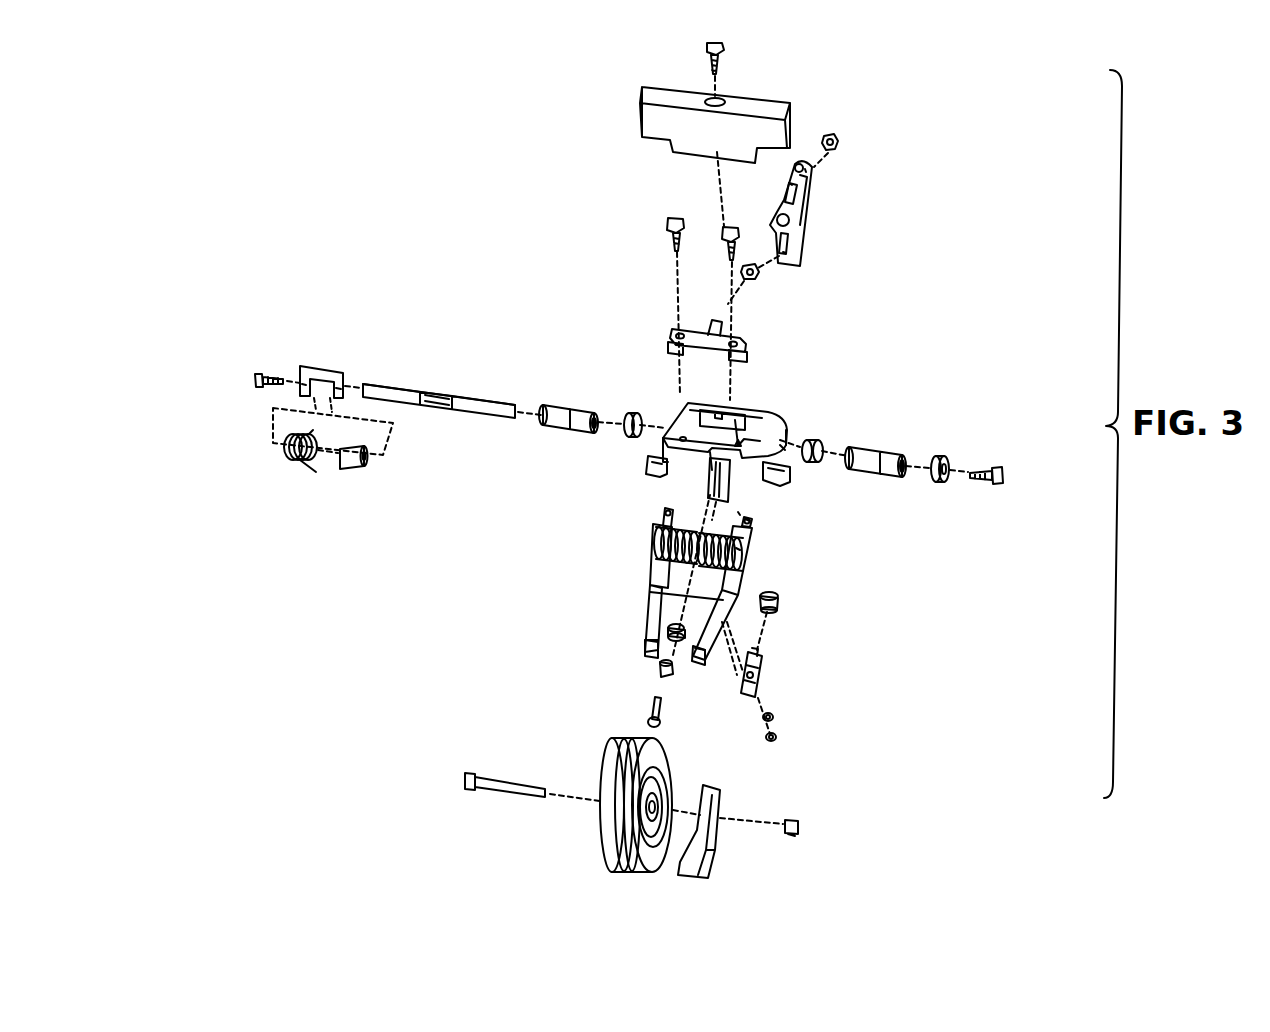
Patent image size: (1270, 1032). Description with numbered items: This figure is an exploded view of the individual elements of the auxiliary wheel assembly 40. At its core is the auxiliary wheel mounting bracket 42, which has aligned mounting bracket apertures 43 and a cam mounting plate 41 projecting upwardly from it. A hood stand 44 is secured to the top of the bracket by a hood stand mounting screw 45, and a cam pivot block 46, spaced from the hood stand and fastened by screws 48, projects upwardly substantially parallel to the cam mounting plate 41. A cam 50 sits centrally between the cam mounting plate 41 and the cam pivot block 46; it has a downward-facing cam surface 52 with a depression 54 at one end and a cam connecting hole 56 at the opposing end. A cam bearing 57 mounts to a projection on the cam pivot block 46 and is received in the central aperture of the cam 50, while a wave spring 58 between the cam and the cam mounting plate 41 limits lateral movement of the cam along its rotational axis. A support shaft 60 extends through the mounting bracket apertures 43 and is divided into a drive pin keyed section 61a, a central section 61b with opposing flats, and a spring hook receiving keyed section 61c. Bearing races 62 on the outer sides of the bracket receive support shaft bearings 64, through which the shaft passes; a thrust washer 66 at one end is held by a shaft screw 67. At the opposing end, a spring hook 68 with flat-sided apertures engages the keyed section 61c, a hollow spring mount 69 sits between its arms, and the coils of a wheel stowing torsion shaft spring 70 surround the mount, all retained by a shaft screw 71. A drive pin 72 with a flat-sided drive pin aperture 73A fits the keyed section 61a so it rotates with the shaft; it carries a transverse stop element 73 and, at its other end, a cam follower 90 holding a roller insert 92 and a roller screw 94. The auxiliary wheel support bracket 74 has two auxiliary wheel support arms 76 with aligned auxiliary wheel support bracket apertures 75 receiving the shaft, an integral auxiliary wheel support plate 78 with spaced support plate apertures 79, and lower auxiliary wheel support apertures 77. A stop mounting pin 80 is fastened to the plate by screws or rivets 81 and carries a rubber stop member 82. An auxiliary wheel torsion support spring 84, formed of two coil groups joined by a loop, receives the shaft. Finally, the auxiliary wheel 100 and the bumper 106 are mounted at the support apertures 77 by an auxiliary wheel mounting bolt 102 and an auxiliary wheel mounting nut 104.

The auxiliary wheel assembly 40 is at (500, 573).
The cam mounting plate 41 is at (735, 405).
The auxiliary wheel mounting bracket 42 is at (784, 420).
The mounting bracket apertures 43 is at (782, 448).
The hood stand 44 is at (790, 118).
The hood stand mounting screw 45 is at (722, 48).
The cam pivot block 46 is at (672, 347).
The screws 48 is at (726, 228).
The cam 50 is at (810, 210).
The cam surface 52 is at (780, 245).
The depression 54 is at (792, 260).
The cam connecting hole 56 is at (812, 176).
The cam bearing 57 is at (760, 275).
The wave spring 58 is at (840, 139).
The support shaft 60 is at (482, 412).
The drive pin keyed section 61a is at (484, 400).
The central section 61b is at (412, 393).
The spring hook receiving keyed section 61c is at (380, 387).
The bearing races 62 is at (633, 420).
The support shaft bearings 64 is at (572, 412).
The thrust washer 66 is at (942, 458).
The shaft screw 67 is at (998, 468).
The spring hook 68 is at (316, 366).
The hollow spring mount 69 is at (345, 470).
The wheel stowing torsion shaft spring 70 is at (292, 466).
The shaft screw 71 is at (255, 380).
The drive pin 72 is at (708, 480).
The stop element 73 is at (660, 462).
The drive pin aperture 73A is at (780, 480).
The auxiliary wheel support bracket 74 is at (758, 528).
The auxiliary wheel support bracket aperture 75 is at (742, 556).
The auxiliary wheel support arms 76 is at (647, 557).
The auxiliary wheel support apertures 77 is at (648, 648).
The auxiliary wheel support plate 78 is at (697, 583).
The support plate apertures 79 is at (697, 567).
The stop mounting pin 80 is at (762, 680).
The stop mounting pin screws or rivets 81 is at (773, 716).
The rubber stop member 82 is at (777, 606).
The auxiliary wheel torsion support spring 84 is at (740, 520).
The cam follower 90 is at (668, 630).
The roller insert 92 is at (656, 670).
The roller screw 94 is at (655, 710).
The auxiliary wheel 100 is at (606, 842).
The auxiliary wheel mounting bolt 102 is at (515, 782).
The auxiliary wheel mounting nut 104 is at (790, 836).
The bumper 106 is at (722, 802).